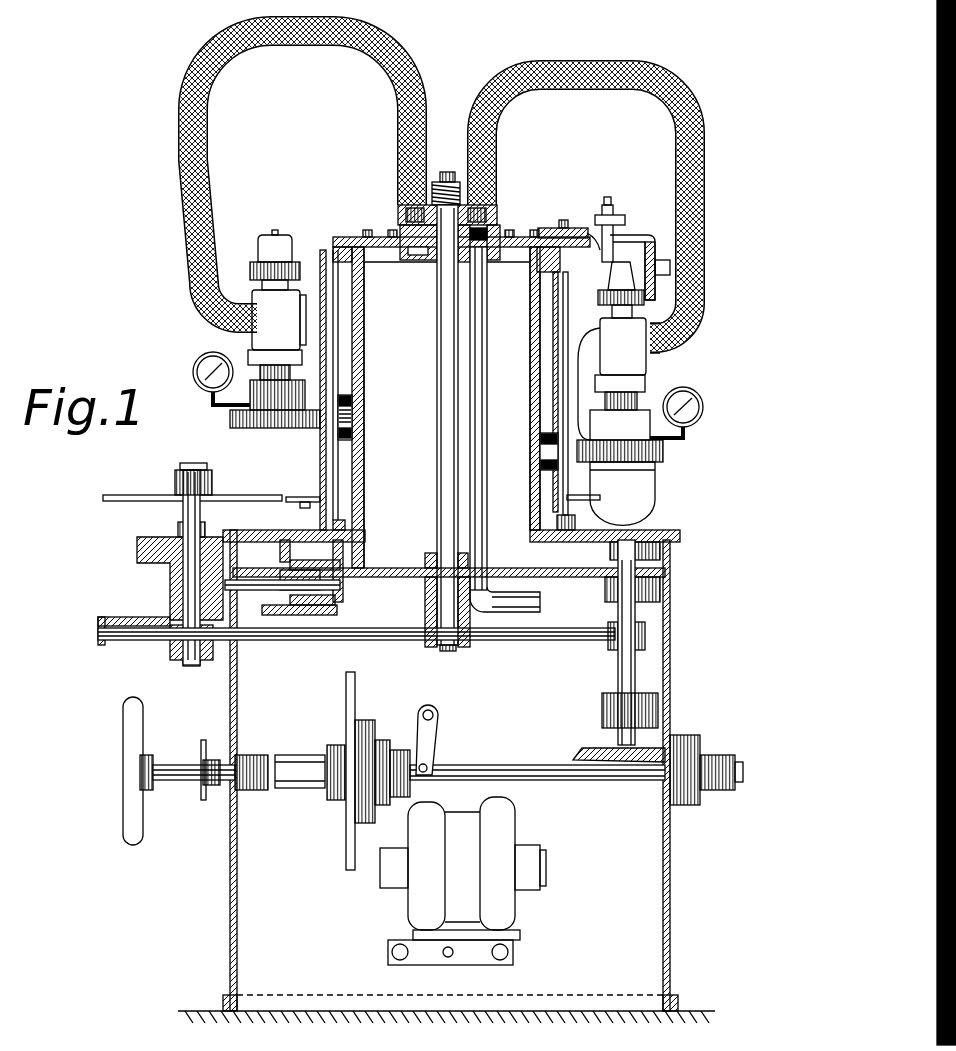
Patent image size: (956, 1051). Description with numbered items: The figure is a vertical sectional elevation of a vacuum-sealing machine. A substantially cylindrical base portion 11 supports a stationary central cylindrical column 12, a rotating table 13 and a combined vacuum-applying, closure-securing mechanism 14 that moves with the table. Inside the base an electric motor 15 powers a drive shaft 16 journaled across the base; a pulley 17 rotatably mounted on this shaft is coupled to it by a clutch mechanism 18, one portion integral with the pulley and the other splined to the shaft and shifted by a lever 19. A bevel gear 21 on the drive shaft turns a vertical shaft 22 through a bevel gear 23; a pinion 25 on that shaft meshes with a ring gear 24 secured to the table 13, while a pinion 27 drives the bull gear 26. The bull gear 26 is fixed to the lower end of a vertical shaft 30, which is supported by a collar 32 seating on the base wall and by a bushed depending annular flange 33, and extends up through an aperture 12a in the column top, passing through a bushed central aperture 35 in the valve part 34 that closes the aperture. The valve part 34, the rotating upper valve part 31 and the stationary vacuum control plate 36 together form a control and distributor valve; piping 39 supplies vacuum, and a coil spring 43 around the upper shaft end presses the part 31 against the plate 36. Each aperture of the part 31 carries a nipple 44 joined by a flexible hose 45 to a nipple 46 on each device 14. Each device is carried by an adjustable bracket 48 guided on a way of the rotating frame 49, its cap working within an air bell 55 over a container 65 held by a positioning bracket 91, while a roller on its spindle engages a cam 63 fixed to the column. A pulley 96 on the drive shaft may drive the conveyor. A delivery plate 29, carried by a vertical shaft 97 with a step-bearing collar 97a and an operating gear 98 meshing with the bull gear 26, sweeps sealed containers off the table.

The base portion 11 is at (670, 882).
The central cylindrical column 12 is at (364, 345).
The aperture 12a is at (425, 253).
The rotating table 13 is at (258, 540).
The combined vacuum-applying, closure-securing mechanism 14 is at (646, 385).
The electric motor 15 is at (515, 838).
The drive shaft 16 is at (505, 765).
The pulley 17 is at (355, 682).
The clutch mechanism 18 is at (372, 732).
The lever 19 is at (436, 724).
The bevel gear 21 is at (665, 787).
The vertical shaft 22 is at (618, 666).
The bevel gear 23 is at (582, 750).
The ring gear 24 is at (283, 568).
The pinion 25 is at (662, 546).
The bull gear 26 is at (545, 640).
The pinion 27 is at (648, 636).
The delivery plate 29 is at (103, 497).
The vertical shaft 30 is at (437, 378).
The upper valve part 31 is at (497, 220).
The collar 32 is at (425, 560).
The depending annular flange 33 is at (425, 590).
The valve part 34 is at (385, 238).
The central aperture 35 is at (433, 262).
The vacuum control plate 36 is at (400, 230).
The piping 39 is at (487, 372).
The coil spring 43 is at (460, 182).
The nipple 44 is at (488, 212).
The hose 45 is at (218, 60).
The nipple 46 is at (662, 352).
The bracket 48 is at (352, 365).
The rotating frame 49 is at (333, 297).
The air bell 55 is at (275, 400).
The cam 63 is at (612, 240).
The container 65 is at (657, 480).
The positioning bracket 91 is at (290, 497).
The pulley 96 is at (207, 800).
The vertical shaft 97 is at (183, 578).
The collar 97a is at (178, 537).
The operating gear 98 is at (155, 643).